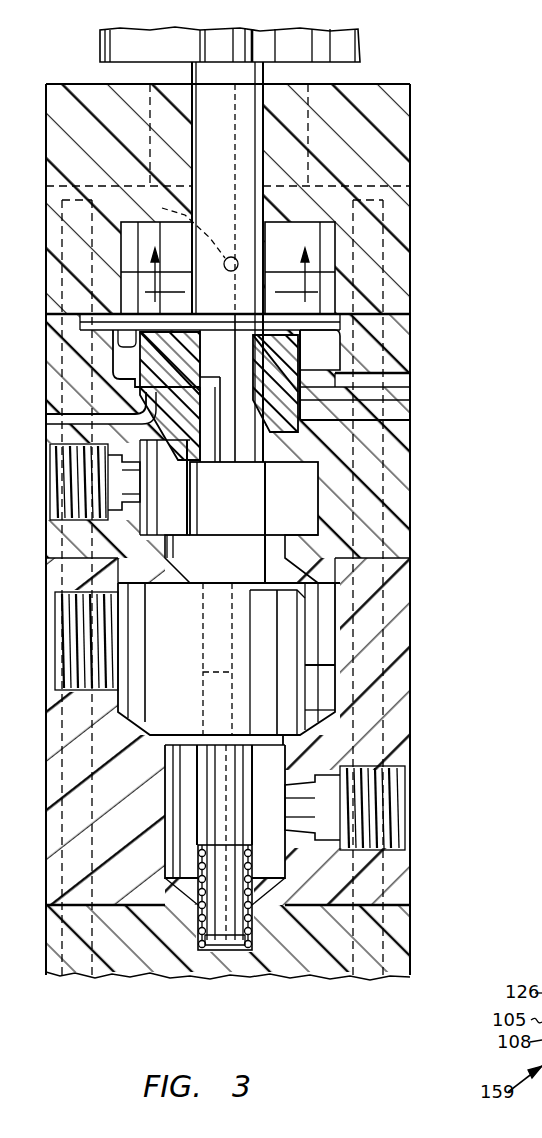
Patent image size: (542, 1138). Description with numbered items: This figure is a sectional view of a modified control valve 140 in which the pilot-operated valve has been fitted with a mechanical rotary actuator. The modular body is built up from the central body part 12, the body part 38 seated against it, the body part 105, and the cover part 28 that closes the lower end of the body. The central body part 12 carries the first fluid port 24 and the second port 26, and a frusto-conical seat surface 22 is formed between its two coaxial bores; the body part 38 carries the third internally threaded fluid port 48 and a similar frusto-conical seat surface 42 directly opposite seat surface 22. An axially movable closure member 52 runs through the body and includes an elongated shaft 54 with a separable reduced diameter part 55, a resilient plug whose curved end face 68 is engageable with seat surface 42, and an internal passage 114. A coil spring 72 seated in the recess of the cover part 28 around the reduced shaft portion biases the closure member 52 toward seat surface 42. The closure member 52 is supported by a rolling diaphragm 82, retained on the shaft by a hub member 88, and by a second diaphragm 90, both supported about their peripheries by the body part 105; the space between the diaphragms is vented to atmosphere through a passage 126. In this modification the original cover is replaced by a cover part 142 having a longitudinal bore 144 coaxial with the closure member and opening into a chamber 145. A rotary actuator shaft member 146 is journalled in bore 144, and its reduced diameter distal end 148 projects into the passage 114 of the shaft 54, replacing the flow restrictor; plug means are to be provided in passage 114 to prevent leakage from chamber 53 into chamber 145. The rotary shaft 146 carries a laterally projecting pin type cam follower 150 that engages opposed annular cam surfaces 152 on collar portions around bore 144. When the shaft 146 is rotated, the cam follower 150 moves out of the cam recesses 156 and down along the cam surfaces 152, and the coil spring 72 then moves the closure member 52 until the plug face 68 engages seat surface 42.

The central body part 12 is at (410, 706).
The frusto-conical seat surface 22 is at (140, 724).
The first fluid port 24 is at (56, 616).
The second port 26 is at (410, 838).
The cover part 28 is at (410, 942).
The body part 38 is at (410, 505).
The frusto-conical seat surface 42 is at (318, 590).
The third internally threaded fluid port 48 is at (55, 466).
The closure member 52 is at (335, 664).
The chamber 53 is at (276, 784).
The elongated shaft 54 is at (275, 496).
The reduced diameter part 55 is at (240, 808).
The curved end face 68 is at (335, 633).
The coil spring 72 is at (248, 978).
The first flexible cylindrical rolling diaphragm 82 is at (62, 446).
The hub member 88 is at (165, 487).
The diaphragm 90 is at (121, 306).
The body part 105 is at (404, 407).
The passage 114 is at (263, 453).
The passage 126 is at (405, 382).
The valve 140 is at (432, 326).
The cover part 142 is at (410, 152).
The longitudinal bore 144 is at (263, 72).
The chamber 145 is at (310, 244).
The rotary actuator shaft member 146 is at (228, 122).
The reduced diameter distal end 148 is at (400, 355).
The pin type cam follower 150 is at (236, 262).
The annular cam surfaces 152 is at (176, 223).
The cam recesses 156 is at (236, 296).